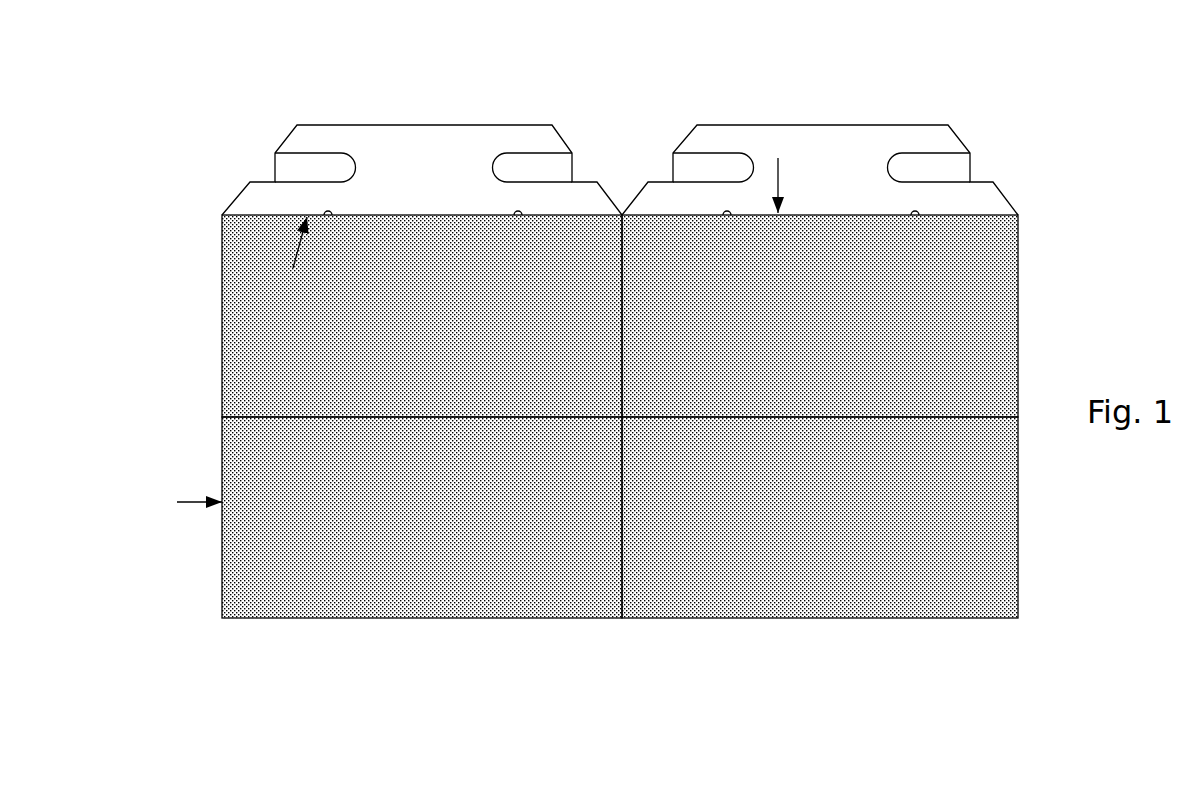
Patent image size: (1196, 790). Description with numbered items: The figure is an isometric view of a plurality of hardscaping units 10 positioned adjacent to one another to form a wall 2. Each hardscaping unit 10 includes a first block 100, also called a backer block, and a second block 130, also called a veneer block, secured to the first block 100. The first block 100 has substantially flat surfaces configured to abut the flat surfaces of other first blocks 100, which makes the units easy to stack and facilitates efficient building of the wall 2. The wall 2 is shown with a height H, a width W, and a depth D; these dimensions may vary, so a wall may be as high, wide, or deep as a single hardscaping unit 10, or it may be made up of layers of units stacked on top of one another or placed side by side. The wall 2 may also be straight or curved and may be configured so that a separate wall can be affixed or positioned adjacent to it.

The wall 2 is at (649, 328).
The hardscaping unit 10 is at (649, 333).
The first block 100 is at (413, 137).
The second block 130 is at (958, 324).
The depth D is at (338, 125).
The width W is at (1018, 500).
The height H is at (781, 618).